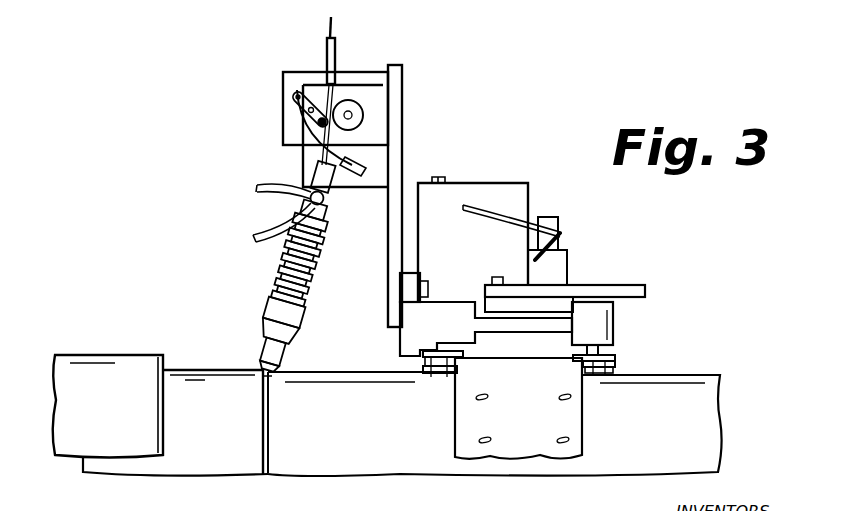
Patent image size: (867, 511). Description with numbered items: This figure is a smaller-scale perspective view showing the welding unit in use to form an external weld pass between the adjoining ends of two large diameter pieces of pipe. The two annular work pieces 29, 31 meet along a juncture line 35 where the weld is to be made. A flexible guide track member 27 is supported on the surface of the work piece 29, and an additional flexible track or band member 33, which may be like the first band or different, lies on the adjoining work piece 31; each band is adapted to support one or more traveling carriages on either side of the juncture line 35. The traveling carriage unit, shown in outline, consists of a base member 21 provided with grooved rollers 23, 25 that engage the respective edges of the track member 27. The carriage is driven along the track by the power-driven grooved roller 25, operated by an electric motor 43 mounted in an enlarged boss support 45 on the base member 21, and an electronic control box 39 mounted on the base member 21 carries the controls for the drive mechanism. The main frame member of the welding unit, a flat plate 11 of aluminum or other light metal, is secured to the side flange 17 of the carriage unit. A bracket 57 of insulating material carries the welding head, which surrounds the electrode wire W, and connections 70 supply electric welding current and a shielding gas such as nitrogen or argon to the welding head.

The flat plate 11 is at (402, 110).
The side flange 17 is at (408, 286).
The base member 21 is at (410, 332).
The grooved roller 23 is at (435, 368).
The grooved roller 25 is at (617, 362).
The flexible guide track member 27 is at (540, 421).
The work piece 29 is at (685, 415).
The adjoining work piece 31 is at (185, 385).
The flexible track or band member 33 is at (107, 370).
The juncture line 35 is at (270, 440).
The electronic control box 39 is at (475, 183).
The electric motor 43 is at (618, 317).
The enlarged boss support 45 is at (617, 334).
The bracket 57 is at (330, 193).
The connections 70 is at (307, 191).
The electrode wire W is at (263, 377).